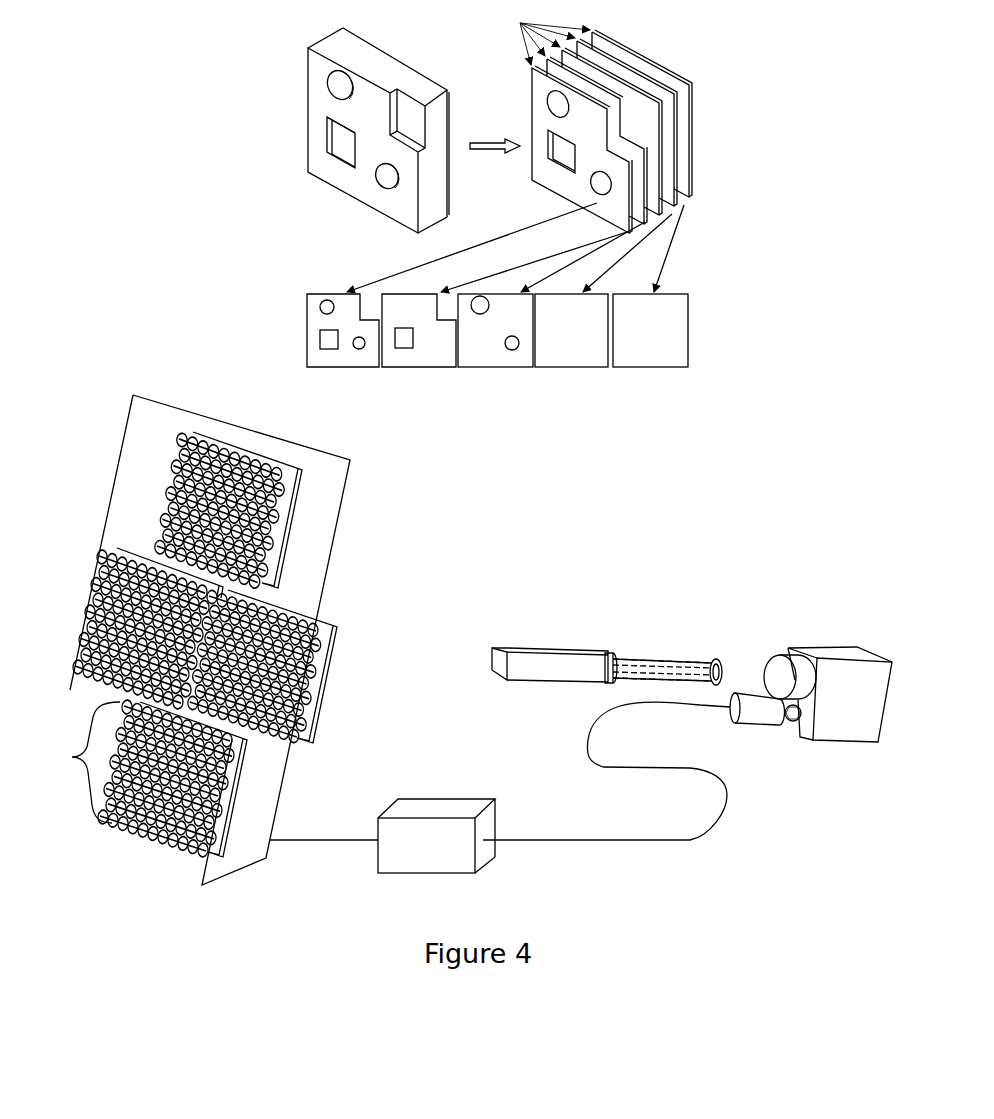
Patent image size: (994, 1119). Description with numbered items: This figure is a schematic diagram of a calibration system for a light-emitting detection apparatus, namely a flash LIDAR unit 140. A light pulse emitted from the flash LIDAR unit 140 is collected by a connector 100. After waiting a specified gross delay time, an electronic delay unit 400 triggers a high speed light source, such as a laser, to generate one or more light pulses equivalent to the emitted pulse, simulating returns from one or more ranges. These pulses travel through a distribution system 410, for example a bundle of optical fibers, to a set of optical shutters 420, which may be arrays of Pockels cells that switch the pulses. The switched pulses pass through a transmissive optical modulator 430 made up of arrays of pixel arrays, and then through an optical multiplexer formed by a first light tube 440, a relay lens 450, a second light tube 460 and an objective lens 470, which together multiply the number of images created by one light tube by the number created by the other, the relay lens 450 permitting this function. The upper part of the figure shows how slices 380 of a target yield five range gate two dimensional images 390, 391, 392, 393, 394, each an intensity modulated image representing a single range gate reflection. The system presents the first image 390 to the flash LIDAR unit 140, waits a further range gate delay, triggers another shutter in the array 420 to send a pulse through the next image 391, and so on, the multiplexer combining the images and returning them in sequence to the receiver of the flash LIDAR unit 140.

The connector 100 is at (758, 715).
The flash LIDAR unit 140 is at (838, 710).
The slices of target 380 is at (703, 52).
The first range gate two dimensional image 390 is at (343, 359).
The second range gate two dimensional image 391 is at (419, 359).
The third range gate two dimensional image 392 is at (495, 359).
The fourth range gate two dimensional image 393 is at (571, 359).
The fifth range gate two dimensional image 394 is at (650, 359).
The electronic delay unit 400 is at (436, 836).
The distribution system 410 is at (320, 841).
The optical shutters 420 is at (189, 640).
The transmissive optical modulator 430 is at (237, 783).
The first light tube 440 is at (542, 650).
The relay lens 450 is at (611, 653).
The second light tube 460 is at (663, 658).
The objective lens 470 is at (715, 656).